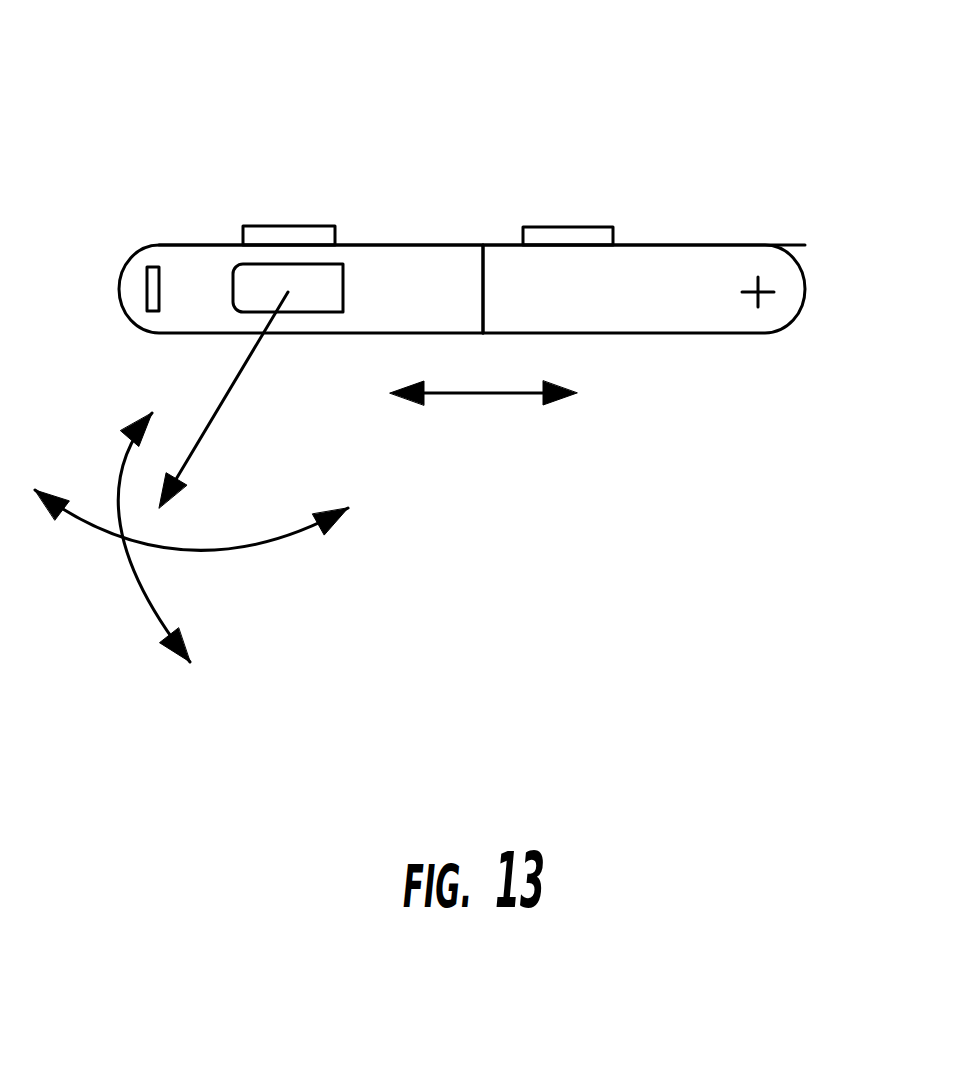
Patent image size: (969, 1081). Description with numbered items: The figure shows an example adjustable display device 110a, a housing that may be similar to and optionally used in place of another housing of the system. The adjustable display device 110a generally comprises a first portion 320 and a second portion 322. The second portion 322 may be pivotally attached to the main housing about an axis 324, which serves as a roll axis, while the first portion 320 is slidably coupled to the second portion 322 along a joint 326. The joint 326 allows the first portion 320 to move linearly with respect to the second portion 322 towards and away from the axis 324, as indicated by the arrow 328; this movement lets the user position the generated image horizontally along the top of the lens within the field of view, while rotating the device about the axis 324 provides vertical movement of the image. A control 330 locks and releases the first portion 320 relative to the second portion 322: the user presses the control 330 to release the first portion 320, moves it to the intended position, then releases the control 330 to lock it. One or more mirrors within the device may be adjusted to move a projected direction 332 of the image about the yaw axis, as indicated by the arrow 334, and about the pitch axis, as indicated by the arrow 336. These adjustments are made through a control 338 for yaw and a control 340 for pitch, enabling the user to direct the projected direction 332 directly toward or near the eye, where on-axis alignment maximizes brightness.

The adjustable display device 110a is at (310, 50).
The first portion 320 is at (438, 260).
The second portion 322 is at (705, 260).
The axis 324 is at (767, 282).
The joint 326 is at (483, 272).
The arrow 328 is at (472, 393).
The control 330 is at (575, 240).
The projected direction 332 is at (233, 380).
The arrow 334 is at (268, 543).
The arrow 336 is at (140, 607).
The control 338 is at (280, 235).
The control 340 is at (151, 292).